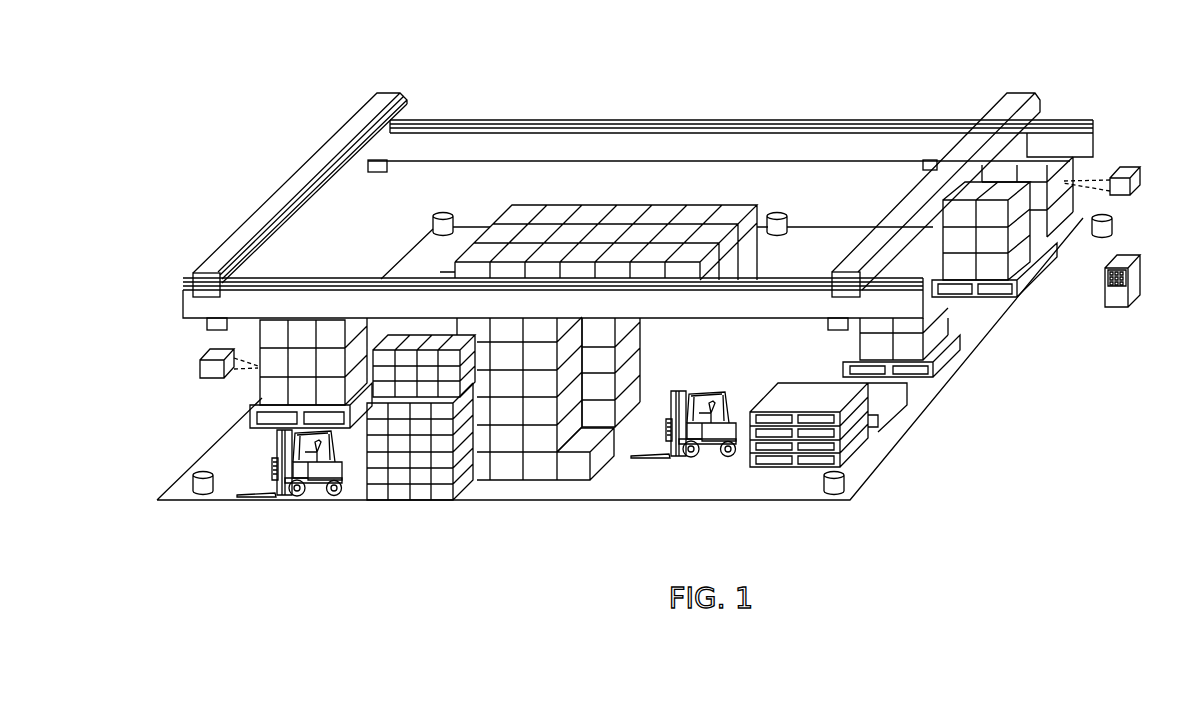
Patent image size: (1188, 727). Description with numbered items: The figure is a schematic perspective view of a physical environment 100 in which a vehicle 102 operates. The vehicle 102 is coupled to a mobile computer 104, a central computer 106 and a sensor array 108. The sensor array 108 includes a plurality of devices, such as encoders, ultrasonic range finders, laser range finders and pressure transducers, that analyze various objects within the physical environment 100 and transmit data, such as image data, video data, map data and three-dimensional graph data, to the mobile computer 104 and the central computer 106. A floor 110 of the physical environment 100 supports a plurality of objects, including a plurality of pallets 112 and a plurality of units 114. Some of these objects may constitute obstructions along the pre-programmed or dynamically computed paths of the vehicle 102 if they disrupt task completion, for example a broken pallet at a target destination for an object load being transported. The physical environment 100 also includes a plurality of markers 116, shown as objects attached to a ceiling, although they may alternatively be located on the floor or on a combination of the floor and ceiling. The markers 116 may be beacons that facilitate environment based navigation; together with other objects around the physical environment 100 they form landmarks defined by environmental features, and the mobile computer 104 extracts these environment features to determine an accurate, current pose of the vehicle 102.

The physical environment 100 is at (877, 29).
The vehicle 102 is at (317, 488).
The mobile computer 104 is at (667, 437).
The central computer 106 is at (1120, 308).
The sensor array 108 is at (673, 408).
The floor 110 is at (765, 483).
The pallets 112 is at (948, 353).
The units 114 is at (200, 362).
The markers 116 is at (376, 176).